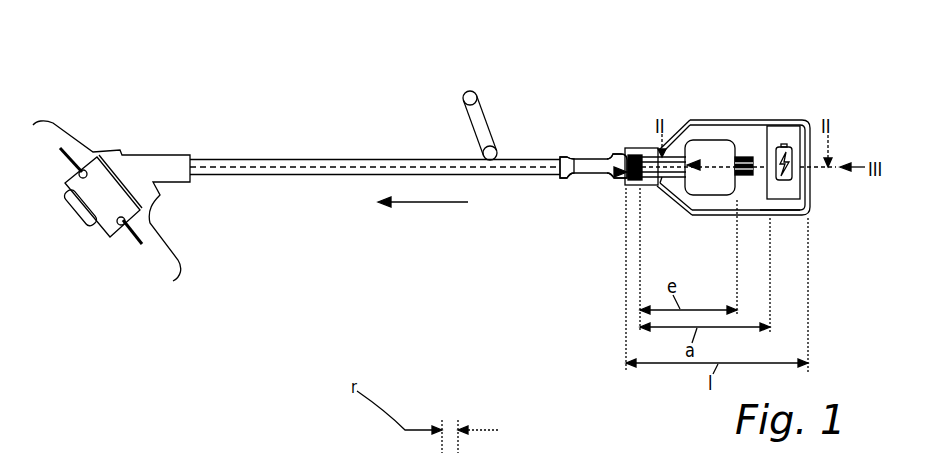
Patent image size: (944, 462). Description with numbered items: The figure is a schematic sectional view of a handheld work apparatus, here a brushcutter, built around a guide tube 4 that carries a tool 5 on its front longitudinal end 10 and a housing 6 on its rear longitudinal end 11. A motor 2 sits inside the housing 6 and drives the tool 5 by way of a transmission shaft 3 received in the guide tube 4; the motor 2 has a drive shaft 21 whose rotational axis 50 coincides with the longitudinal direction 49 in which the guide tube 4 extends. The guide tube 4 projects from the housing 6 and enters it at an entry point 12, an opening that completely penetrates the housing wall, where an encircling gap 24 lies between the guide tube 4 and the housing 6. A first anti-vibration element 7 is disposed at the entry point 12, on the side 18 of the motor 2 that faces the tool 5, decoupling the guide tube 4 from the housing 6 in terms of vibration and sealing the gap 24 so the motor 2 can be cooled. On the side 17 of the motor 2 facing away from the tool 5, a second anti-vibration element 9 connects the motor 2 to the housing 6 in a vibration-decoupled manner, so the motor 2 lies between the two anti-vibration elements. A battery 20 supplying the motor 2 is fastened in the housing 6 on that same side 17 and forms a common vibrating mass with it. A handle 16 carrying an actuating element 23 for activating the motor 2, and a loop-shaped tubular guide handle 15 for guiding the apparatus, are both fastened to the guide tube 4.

The front longitudinal end 10 is at (146, 167).
The tool 5 is at (132, 240).
The transmission shaft 3 is at (415, 163).
The rotational axis 50 is at (375, 133).
The guide handle 15 is at (477, 96).
The longitudinal direction 49 is at (440, 203).
The handle 16 is at (583, 160).
The actuating element 23 is at (592, 180).
The entry point 12 is at (600, 180).
The first anti-vibration element 7 is at (630, 152).
The guide tube 4 is at (684, 163).
The drive shaft 21 is at (662, 152).
The gap 24 is at (662, 187).
The side of the motor facing the tool 18 is at (676, 192).
The side of the motor facing away from the tool 17 is at (752, 146).
The housing 6 is at (774, 207).
The motor 2 is at (723, 150).
The rear longitudinal end 11 is at (700, 165).
The second anti-vibration element 9 is at (746, 177).
The battery 20 is at (792, 192).